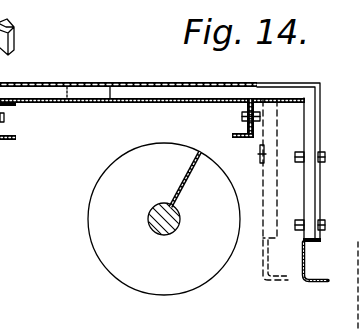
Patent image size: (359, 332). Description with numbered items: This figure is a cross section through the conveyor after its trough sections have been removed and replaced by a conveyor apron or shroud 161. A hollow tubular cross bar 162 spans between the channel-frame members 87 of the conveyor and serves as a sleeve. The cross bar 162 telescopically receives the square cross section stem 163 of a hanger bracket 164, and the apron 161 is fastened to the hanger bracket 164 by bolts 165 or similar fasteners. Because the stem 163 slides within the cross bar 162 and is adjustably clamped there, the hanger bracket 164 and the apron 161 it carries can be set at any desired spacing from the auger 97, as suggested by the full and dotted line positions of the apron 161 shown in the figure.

The hollow tubular cross bar 162 is at (173, 81).
The stem 163 is at (284, 86).
The hanger bracket 164 is at (313, 123).
The bolt 165 is at (324, 157).
The conveyor apron 161 is at (305, 256).
The channel-frame member 87 is at (16, 137).
The auger 97 is at (186, 284).